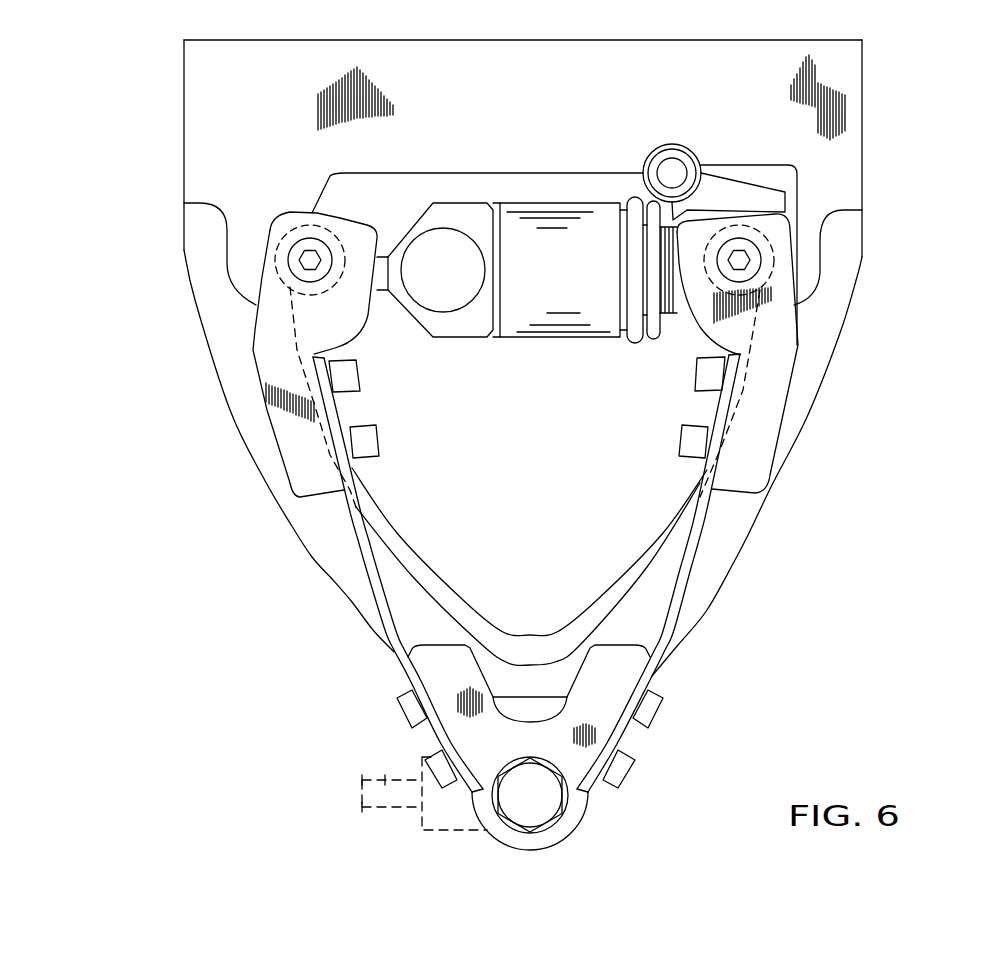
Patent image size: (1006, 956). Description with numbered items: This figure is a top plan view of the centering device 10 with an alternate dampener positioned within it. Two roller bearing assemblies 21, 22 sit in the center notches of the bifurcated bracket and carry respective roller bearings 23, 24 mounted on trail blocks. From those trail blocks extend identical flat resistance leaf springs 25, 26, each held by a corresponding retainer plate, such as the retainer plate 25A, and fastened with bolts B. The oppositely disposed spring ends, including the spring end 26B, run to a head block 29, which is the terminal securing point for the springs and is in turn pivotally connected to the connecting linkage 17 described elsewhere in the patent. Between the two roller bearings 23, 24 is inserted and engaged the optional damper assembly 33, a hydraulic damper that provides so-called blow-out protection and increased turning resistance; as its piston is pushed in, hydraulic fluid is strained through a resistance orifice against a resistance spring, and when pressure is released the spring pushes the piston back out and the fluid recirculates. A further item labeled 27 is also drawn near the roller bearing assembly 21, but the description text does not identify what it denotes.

The centering device 10 is at (863, 392).
The connecting linkage 17 is at (385, 775).
The roller bearing assembly 21 is at (792, 338).
The roller bearing assembly 22 is at (764, 234).
The roller bearing 23 is at (288, 232).
The roller bearing 24 is at (774, 262).
The flat resistance leaf spring 25 is at (697, 535).
The retainer plate 25A is at (716, 408).
The flat resistance leaf spring 26 is at (366, 567).
The spring end 26B is at (347, 412).
The left pivot bushing 27 is at (335, 228).
The head block 29 is at (617, 678).
The damper assembly 33 is at (541, 196).
The bolts B is at (379, 446).